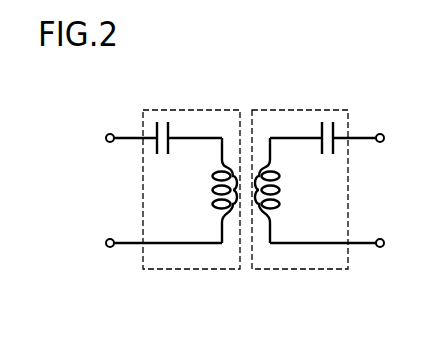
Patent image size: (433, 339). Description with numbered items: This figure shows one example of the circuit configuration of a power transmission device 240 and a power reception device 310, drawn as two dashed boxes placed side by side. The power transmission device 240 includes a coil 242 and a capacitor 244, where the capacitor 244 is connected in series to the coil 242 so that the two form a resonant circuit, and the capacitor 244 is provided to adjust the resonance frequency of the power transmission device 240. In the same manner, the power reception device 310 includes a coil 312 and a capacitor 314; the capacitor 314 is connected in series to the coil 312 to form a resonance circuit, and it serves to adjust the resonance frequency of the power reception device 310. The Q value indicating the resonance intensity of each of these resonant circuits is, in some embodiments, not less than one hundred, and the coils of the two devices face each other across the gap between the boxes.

The power transmission device 240 is at (215, 110).
The coil 242 is at (218, 206).
The capacitor 244 is at (178, 123).
The power reception device 310 is at (275, 110).
The coil 312 is at (276, 206).
The capacitor 314 is at (313, 122).